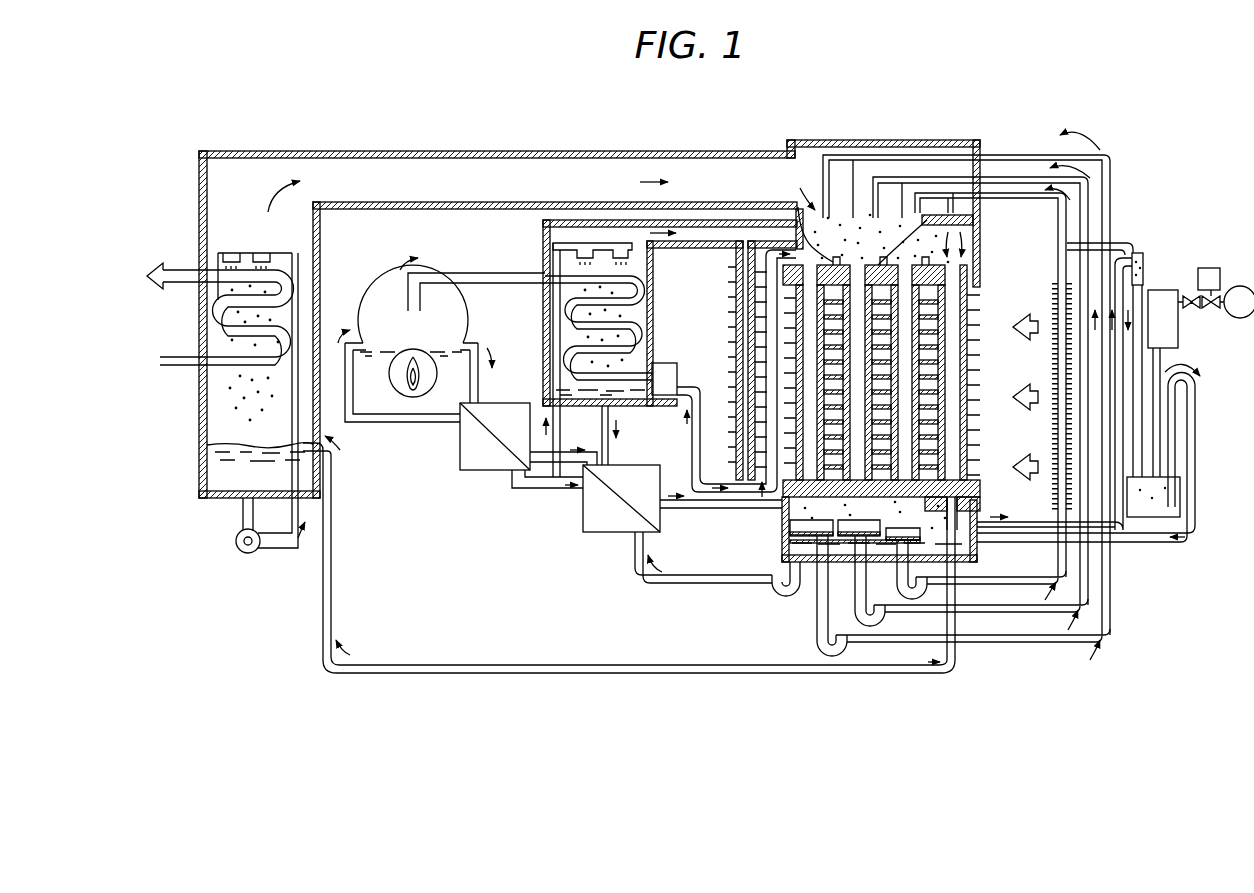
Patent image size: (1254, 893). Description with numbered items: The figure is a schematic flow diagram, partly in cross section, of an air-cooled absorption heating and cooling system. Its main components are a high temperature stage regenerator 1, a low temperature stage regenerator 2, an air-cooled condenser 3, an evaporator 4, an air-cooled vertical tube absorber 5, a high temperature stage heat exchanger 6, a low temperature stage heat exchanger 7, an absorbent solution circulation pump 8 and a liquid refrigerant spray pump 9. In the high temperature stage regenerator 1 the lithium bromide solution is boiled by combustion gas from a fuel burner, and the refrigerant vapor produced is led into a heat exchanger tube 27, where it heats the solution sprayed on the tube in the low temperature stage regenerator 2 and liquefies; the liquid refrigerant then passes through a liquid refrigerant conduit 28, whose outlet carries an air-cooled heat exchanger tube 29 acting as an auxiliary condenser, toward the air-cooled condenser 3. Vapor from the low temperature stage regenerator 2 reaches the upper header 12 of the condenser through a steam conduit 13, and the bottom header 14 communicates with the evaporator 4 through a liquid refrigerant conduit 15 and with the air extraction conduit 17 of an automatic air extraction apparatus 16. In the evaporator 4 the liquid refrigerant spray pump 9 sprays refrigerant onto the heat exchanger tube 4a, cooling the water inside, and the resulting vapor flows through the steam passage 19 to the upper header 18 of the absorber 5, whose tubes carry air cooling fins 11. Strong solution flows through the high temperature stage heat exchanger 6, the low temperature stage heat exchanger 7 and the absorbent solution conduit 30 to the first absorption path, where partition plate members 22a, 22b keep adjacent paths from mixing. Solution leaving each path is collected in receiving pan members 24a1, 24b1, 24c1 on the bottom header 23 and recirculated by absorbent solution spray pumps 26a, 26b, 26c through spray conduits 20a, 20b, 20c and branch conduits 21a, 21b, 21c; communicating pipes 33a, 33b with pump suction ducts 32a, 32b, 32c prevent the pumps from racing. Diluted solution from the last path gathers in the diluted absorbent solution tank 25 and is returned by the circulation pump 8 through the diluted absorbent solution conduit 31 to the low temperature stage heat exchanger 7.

The high temperature stage regenerator 1 is at (456, 333).
The low temperature stage regenerator 2 is at (602, 233).
The air-cooled condenser 3 is at (915, 388).
The evaporator 4 is at (220, 318).
The heat exchanger tube 4a is at (223, 375).
The air-cooled vertical tube absorber 5 is at (905, 425).
The high temperature stage heat exchanger 6 is at (460, 441).
The low temperature stage heat exchanger 7 is at (583, 512).
The absorbent solution circulation pump 8 is at (780, 593).
The liquid refrigerant spray pump 9 is at (258, 550).
The air cooling fins 11 is at (972, 372).
The upper header 12 is at (965, 245).
The steam conduit 13 is at (717, 237).
The bottom header 14 is at (965, 500).
The liquid refrigerant conduit 15 is at (688, 675).
The automatic air extraction apparatus 16 is at (1160, 288).
The air extraction conduit 17 is at (1022, 522).
The upper header 18 is at (810, 151).
The steam passage 19 is at (735, 156).
The absorbent solution spray conduit 20a is at (816, 184).
The absorbent solution spray conduit 20b is at (868, 190).
The absorbent solution spray conduit 20c is at (940, 190).
The branch conduit 21a is at (842, 153).
The branch conduit 21b is at (890, 205).
The branch conduit 21c is at (960, 213).
The partition plate member 22a is at (795, 200).
The partition plate member 22b is at (935, 225).
The bottom header 23 is at (920, 500).
The receiving pan member 24a1 is at (830, 537).
The receiving pan member 24b1 is at (812, 518).
The receiving pan member 24c1 is at (963, 545).
The diluted absorbent solution tank 25 is at (968, 555).
The absorbent solution spray pump 26a is at (822, 652).
The absorbent solution spray pump 26b is at (866, 625).
The absorbent solution spray pump 26c is at (903, 598).
The heat exchanger tube 27 is at (648, 290).
The liquid refrigerant conduit 28 is at (690, 390).
The air-cooled heat exchanger tube 29 is at (737, 355).
The absorbent solution conduit 30 is at (673, 510).
The diluted absorbent solution conduit 31 is at (673, 586).
The pump suction duct 32a is at (818, 612).
The pump suction duct 32b is at (857, 583).
The pump suction duct 32c is at (905, 570).
The communicating pipe 33a is at (850, 610).
The communicating pipe 33b is at (936, 645).